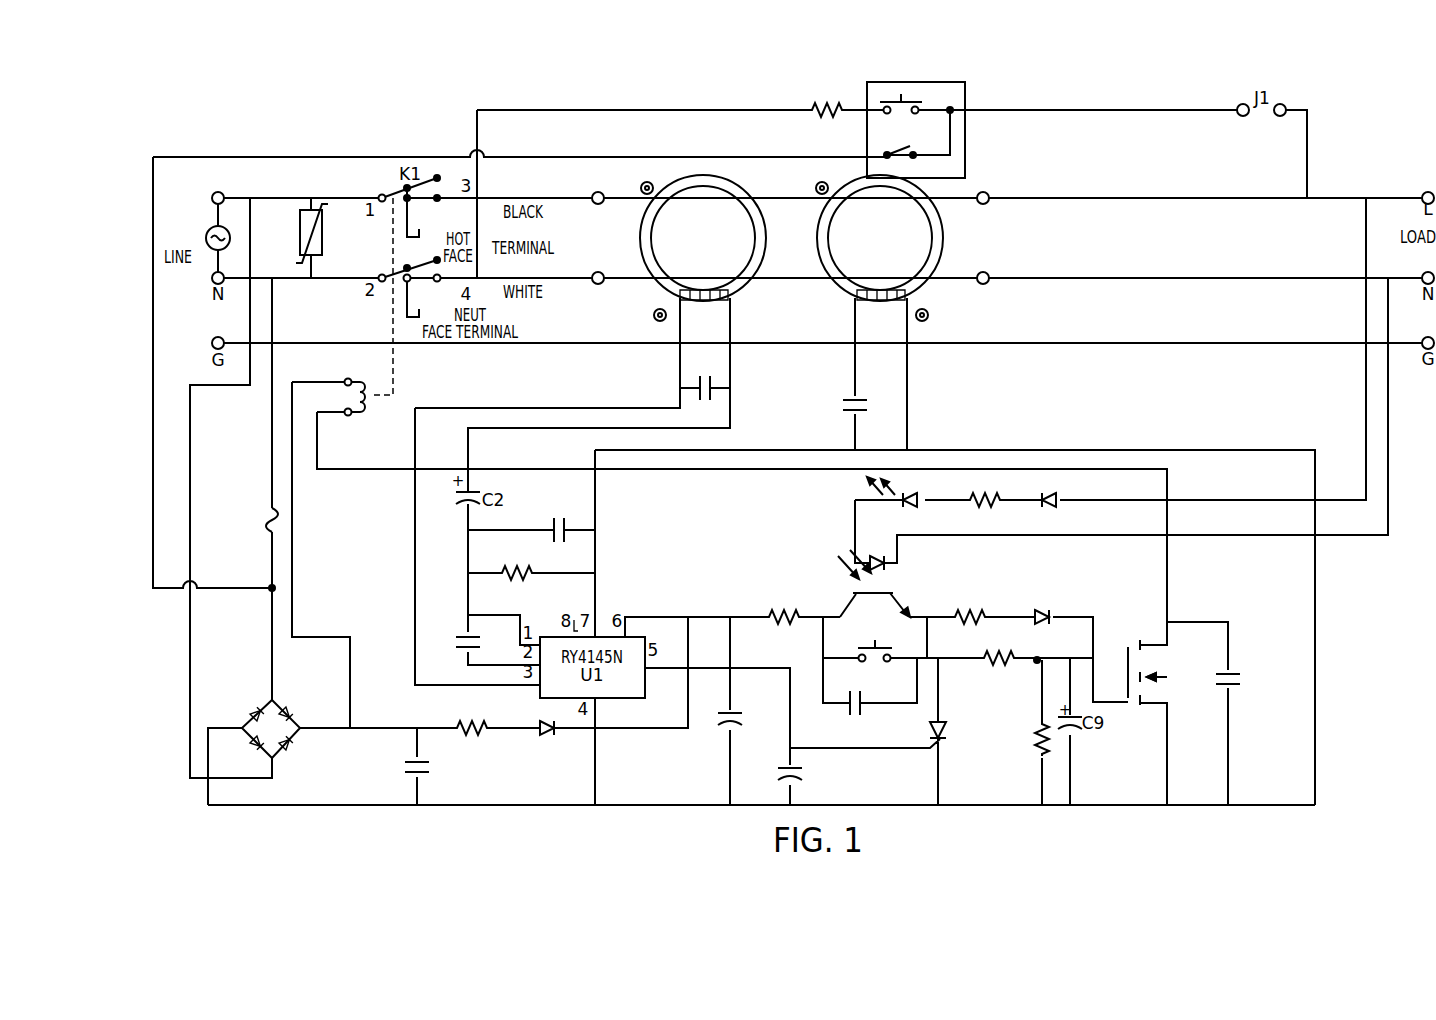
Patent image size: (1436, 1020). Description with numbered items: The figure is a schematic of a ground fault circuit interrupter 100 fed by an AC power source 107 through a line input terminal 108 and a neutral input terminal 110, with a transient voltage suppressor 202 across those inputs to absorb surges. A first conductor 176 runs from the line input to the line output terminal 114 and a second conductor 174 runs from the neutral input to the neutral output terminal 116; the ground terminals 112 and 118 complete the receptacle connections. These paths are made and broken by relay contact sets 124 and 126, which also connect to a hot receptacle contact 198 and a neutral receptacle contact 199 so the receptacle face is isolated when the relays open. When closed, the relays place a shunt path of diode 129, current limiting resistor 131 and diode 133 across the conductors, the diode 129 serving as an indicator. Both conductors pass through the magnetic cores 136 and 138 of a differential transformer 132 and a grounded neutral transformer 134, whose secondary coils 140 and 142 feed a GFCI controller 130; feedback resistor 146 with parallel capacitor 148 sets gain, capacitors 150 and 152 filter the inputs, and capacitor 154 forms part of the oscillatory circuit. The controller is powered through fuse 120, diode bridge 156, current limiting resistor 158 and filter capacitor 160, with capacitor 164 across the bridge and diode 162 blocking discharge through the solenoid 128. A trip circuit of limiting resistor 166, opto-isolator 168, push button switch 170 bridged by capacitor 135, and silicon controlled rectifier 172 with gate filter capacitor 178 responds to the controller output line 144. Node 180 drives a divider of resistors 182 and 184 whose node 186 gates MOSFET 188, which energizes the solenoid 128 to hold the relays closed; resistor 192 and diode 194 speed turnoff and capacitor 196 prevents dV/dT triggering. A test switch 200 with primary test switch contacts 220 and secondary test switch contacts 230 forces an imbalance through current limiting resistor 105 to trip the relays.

The ground fault circuit interrupter 100 is at (415, 824).
The current limiting resistor 105 is at (812, 110).
The AC power source 107 is at (206, 236).
The AC line input terminal 108 is at (218, 192).
The AC neutral input terminal 110 is at (212, 280).
The line ground terminal 112 is at (212, 343).
The AC line output terminal 114 is at (1428, 192).
The AC neutral output terminal 116 is at (1428, 272).
The load ground terminal 118 is at (1428, 337).
The fuse 120 is at (270, 512).
The first relay contact set 124 is at (385, 194).
The second relay contact set 126 is at (385, 274).
The solenoid 128 is at (364, 418).
The diode 129 is at (920, 500).
The GFCI controller 130 is at (604, 630).
The current limiting resistor 131 is at (998, 500).
The differential transformer 132 is at (766, 208).
The diode 133 is at (1062, 500).
The grounded neutral transformer 134 is at (944, 208).
The capacitor 135 is at (852, 708).
The magnetic core 136 is at (668, 212).
The magnetic core 138 is at (843, 212).
The secondary coil 140 is at (697, 284).
The secondary coil 142 is at (870, 284).
The output line 144 is at (655, 672).
The feedback resistor 146 is at (542, 573).
The capacitor 148 is at (556, 528).
The capacitor 150 is at (722, 386).
The capacitor 152 is at (462, 637).
The capacitor 154 is at (848, 402).
The diode bridge 156 is at (277, 705).
The current limiting resistor 158 is at (478, 735).
The filter capacitor 160 is at (722, 724).
The diode 162 is at (548, 735).
The capacitor 164 is at (412, 760).
The limiting resistor 166 is at (782, 617).
The opto-isolator 168 is at (882, 590).
The push button switch 170 is at (895, 657).
The silicon controlled rectifier 172 is at (940, 752).
The second conductor 174 is at (562, 276).
The first conductor 176 is at (562, 196).
The capacitor 178 is at (786, 778).
The node 180 is at (915, 617).
The resistor 182 is at (988, 656).
The resistor 184 is at (1030, 746).
The node 186 is at (1039, 662).
The MOSFET 188 is at (1167, 677).
The resistor 192 is at (988, 617).
The diode 194 is at (1055, 617).
The capacitor 196 is at (1236, 683).
The hot receptacle contact 198 is at (422, 240).
The neutral receptacle contact 199 is at (422, 320).
The test switch 200 is at (945, 82).
The transient voltage suppressor 202 is at (323, 235).
The primary test switch contacts 220 is at (919, 108).
The secondary test switch contacts 230 is at (917, 153).